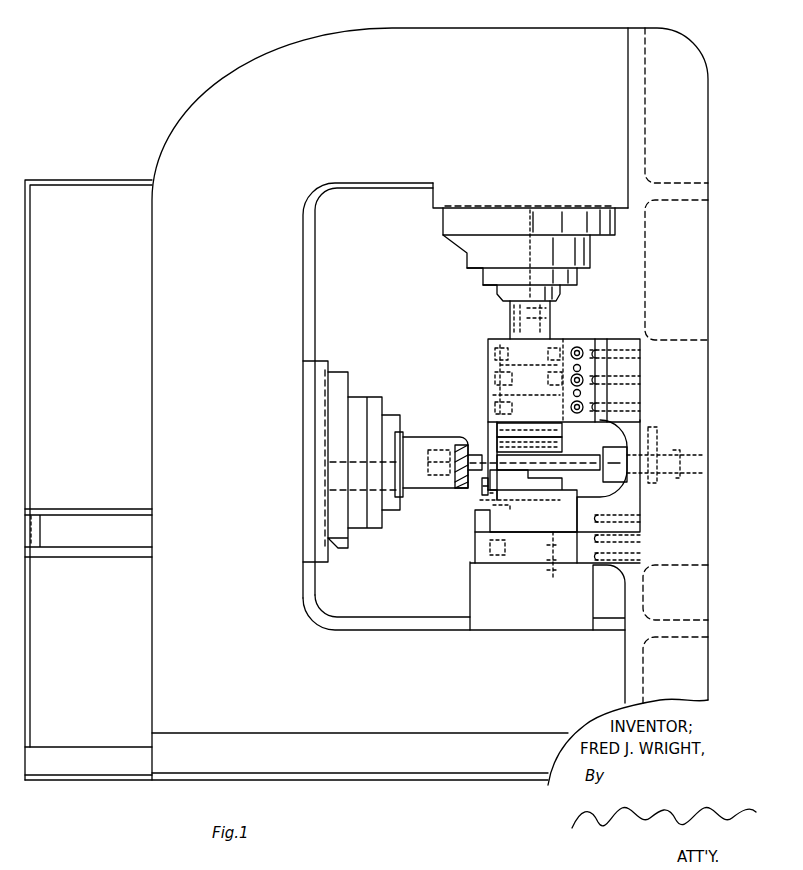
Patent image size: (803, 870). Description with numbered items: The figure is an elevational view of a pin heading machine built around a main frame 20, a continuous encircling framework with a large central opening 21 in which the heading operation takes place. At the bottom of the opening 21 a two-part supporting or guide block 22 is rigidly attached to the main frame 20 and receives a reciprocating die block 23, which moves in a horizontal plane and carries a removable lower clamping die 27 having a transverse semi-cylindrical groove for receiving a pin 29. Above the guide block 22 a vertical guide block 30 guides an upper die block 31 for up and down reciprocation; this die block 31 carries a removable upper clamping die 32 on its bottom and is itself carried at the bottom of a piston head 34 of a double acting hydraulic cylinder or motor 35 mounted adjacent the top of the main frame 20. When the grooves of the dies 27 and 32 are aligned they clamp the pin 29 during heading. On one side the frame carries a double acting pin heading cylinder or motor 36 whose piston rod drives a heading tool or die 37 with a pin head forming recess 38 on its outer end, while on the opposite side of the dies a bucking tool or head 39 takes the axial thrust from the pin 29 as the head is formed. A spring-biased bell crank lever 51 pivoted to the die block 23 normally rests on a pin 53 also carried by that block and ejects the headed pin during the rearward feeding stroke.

The main frame 20 is at (205, 74).
The central opening 21 is at (471, 406).
The supporting or guide block 22 is at (520, 558).
The reciprocating die block 23 is at (526, 516).
The lower clamping die 27 is at (557, 470).
The pin 29 is at (585, 467).
The vertical guide block 30 is at (525, 383).
The die block 31 is at (515, 429).
The upper clamping die 32 is at (560, 443).
The piston head 34 is at (543, 333).
The double acting hydraulic cylinder or motor 35 is at (507, 220).
The pin heading cylinder or motor 36 is at (340, 372).
The heading tool or die 37 is at (437, 443).
The pin head forming recess 38 is at (460, 487).
The bucking tool or head 39 is at (617, 455).
The bell crank lever 51 is at (486, 494).
The pin 53 is at (503, 506).